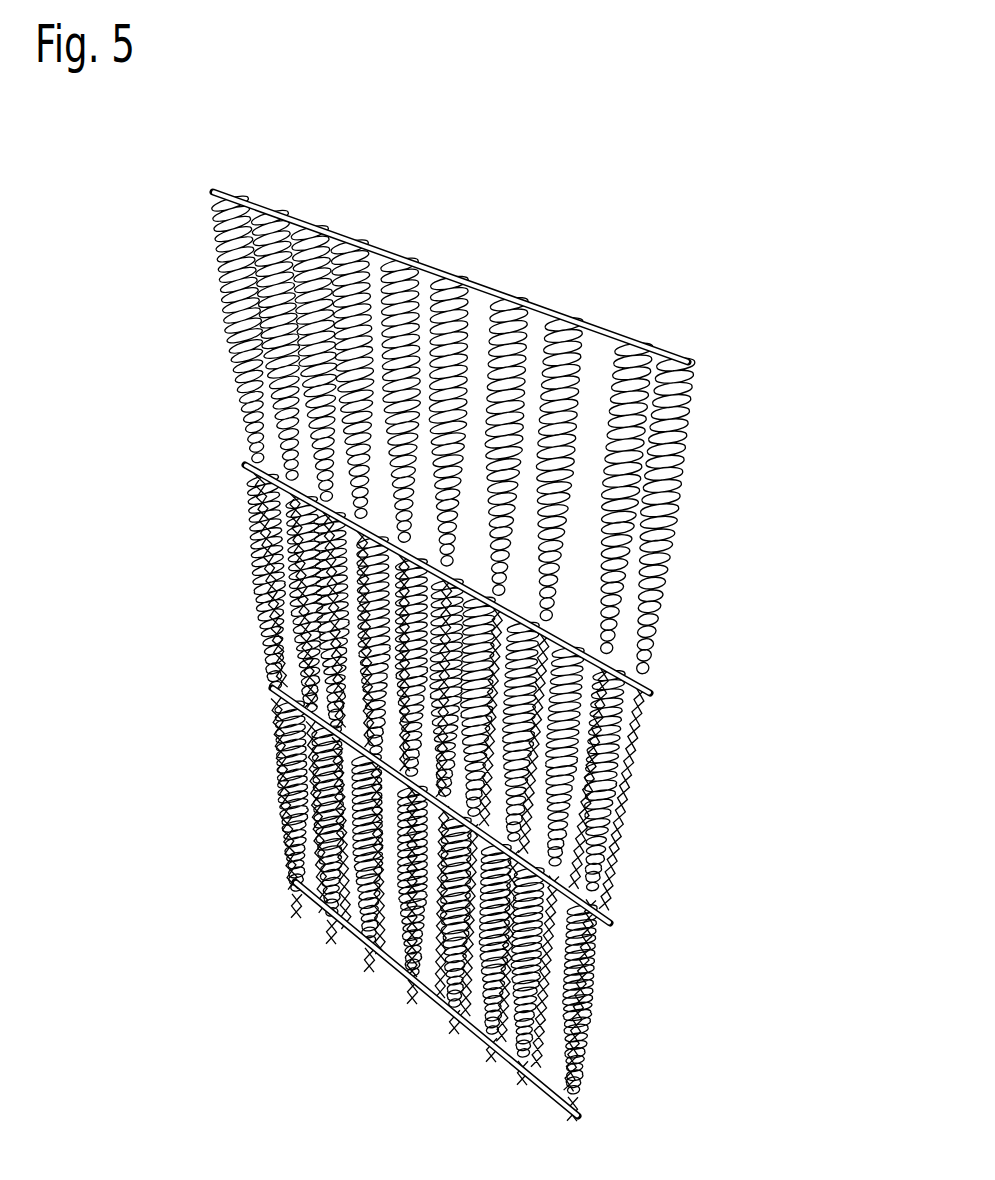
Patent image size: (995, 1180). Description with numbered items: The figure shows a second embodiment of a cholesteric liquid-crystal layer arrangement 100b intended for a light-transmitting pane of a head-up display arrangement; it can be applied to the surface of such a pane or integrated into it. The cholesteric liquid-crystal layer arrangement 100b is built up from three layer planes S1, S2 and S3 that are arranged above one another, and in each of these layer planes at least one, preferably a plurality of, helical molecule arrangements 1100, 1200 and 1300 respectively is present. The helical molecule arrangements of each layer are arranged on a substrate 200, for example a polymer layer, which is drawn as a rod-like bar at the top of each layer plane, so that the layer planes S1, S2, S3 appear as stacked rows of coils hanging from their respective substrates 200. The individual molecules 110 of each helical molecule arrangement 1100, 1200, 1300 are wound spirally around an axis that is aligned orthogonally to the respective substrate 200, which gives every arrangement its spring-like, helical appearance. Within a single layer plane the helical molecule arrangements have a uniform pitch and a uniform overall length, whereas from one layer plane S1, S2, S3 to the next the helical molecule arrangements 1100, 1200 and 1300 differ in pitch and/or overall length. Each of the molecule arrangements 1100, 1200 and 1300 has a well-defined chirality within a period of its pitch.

The cholesteric liquid-crystal layer arrangement 100b is at (513, 226).
The layer plane S3 is at (227, 392).
The layer plane S2 is at (249, 633).
The layer plane S1 is at (256, 803).
The helical molecule arrangement 1300 is at (687, 527).
The helical molecule arrangement 1200 is at (642, 795).
The helical molecule arrangement 1100 is at (623, 1021).
The molecule 110 is at (602, 968).
The substrate 200 is at (653, 693).